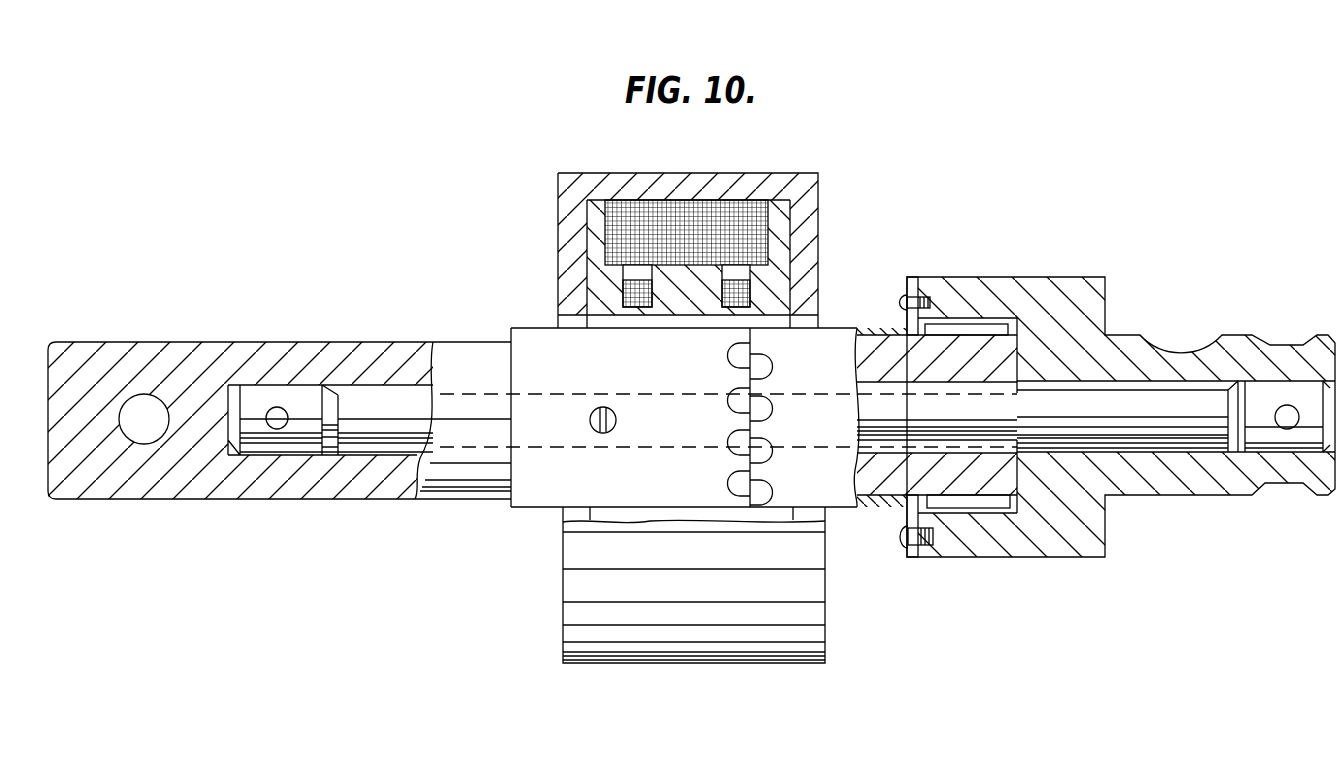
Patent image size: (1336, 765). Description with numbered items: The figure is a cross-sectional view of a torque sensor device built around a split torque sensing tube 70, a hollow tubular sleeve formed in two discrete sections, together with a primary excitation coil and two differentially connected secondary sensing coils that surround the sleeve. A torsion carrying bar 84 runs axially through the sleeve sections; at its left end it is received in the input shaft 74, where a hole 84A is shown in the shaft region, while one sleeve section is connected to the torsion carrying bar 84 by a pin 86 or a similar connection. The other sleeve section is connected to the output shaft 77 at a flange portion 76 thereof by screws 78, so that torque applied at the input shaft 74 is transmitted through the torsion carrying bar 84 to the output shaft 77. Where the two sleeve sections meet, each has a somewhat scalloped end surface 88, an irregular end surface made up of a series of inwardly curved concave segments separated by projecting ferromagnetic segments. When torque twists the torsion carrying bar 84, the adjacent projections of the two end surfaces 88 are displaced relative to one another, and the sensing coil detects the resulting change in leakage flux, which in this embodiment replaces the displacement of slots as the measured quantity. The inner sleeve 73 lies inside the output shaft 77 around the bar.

The torque sensing tube 70 is at (521, 296).
The sleeve 73 is at (960, 327).
The input shaft 74 is at (150, 485).
The flange 76 is at (907, 286).
The output shaft 77 is at (1050, 285).
The screws 78 is at (898, 545).
The torsion carrying bar 84 is at (360, 400).
The pin hole 84A is at (277, 429).
The pin 86 is at (614, 418).
The scalloped end surface 88 is at (803, 382).